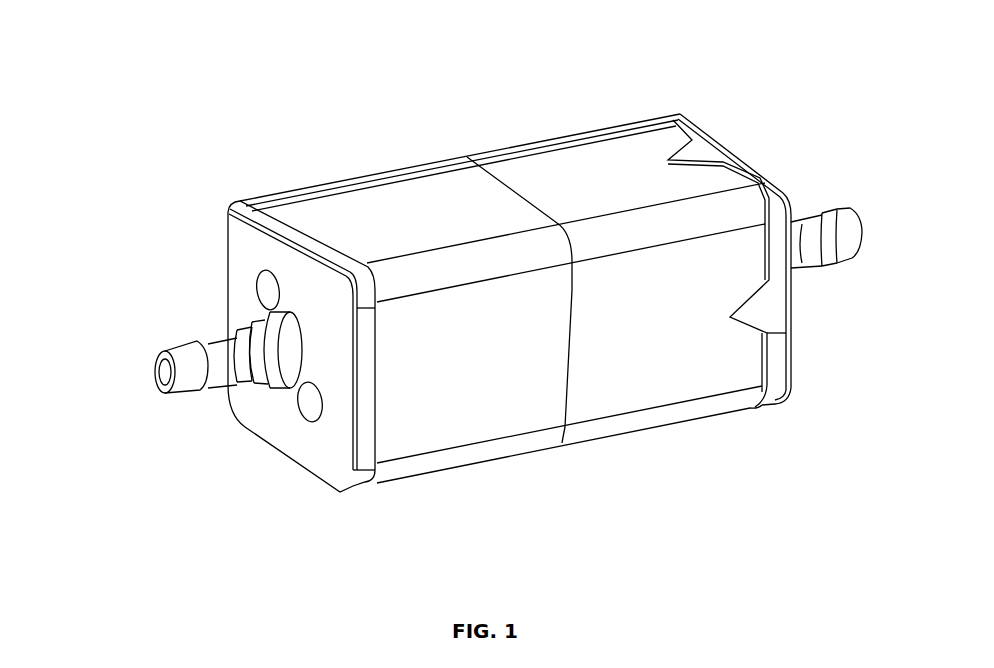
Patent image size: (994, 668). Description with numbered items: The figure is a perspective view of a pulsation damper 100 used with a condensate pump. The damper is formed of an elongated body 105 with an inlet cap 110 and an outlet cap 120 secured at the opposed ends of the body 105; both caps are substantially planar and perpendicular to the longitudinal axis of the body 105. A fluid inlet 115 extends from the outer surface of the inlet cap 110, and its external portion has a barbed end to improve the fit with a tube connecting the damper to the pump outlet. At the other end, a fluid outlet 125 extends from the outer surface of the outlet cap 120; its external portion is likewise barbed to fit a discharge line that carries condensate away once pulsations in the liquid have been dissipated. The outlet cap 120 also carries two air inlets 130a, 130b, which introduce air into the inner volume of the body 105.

The pulsation damper 100 is at (148, 98).
The body 105 is at (547, 442).
The inlet cap 110 is at (782, 388).
The fluid inlet 115 is at (857, 203).
The outlet cap 120 is at (258, 203).
The fluid outlet 125 is at (158, 381).
The air inlet 130a is at (266, 286).
The air inlet 130b is at (308, 400).